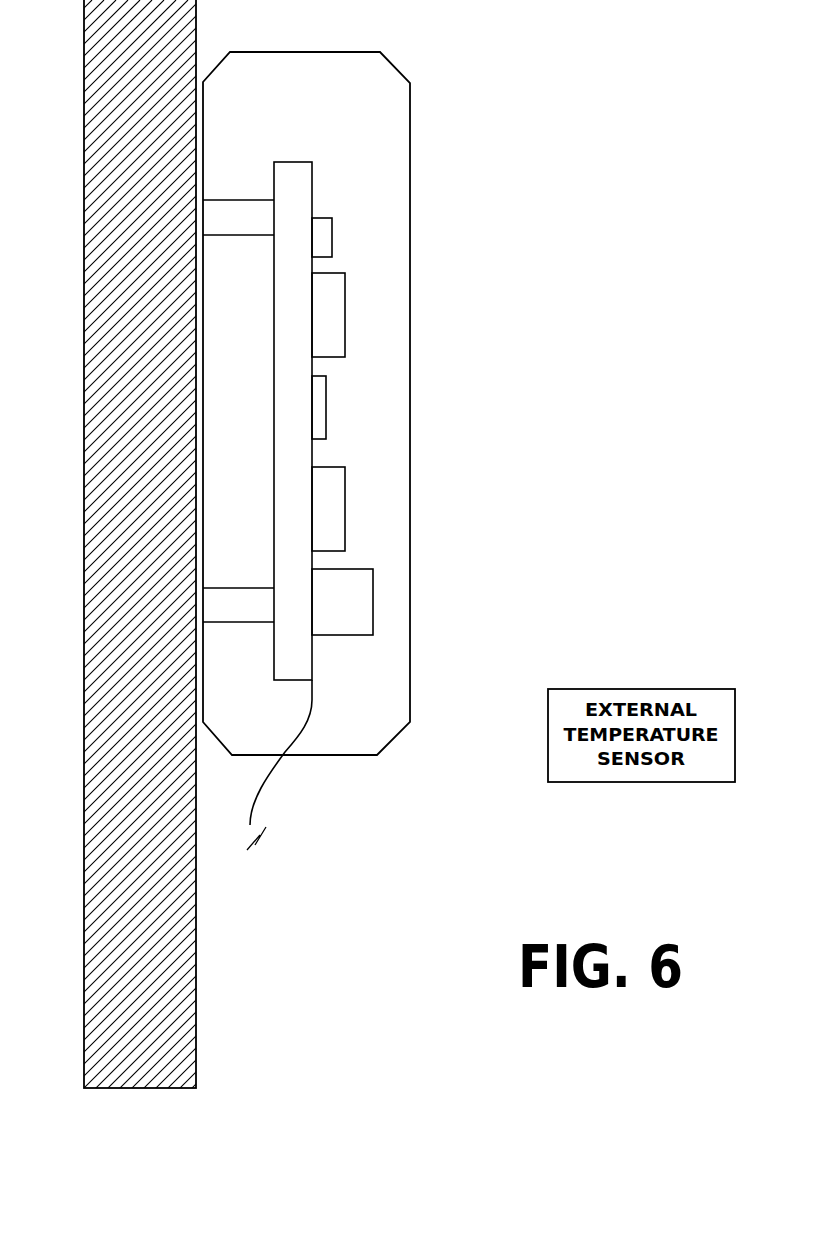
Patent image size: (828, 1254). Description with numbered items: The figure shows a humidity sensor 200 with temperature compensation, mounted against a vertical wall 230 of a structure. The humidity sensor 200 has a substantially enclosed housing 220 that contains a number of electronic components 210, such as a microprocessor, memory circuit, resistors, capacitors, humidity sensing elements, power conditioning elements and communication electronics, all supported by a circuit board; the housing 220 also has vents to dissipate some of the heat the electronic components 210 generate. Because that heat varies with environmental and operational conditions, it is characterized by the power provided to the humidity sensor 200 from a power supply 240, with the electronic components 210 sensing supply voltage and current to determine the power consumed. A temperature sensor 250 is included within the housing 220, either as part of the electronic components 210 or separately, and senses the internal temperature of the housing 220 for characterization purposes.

The humidity sensor 200 is at (374, 428).
The electronic components 210 is at (290, 160).
The housing 220 is at (410, 178).
The vertical wall 230 is at (123, 212).
The power supply 240 is at (335, 309).
The temperature sensor 250 is at (323, 405).